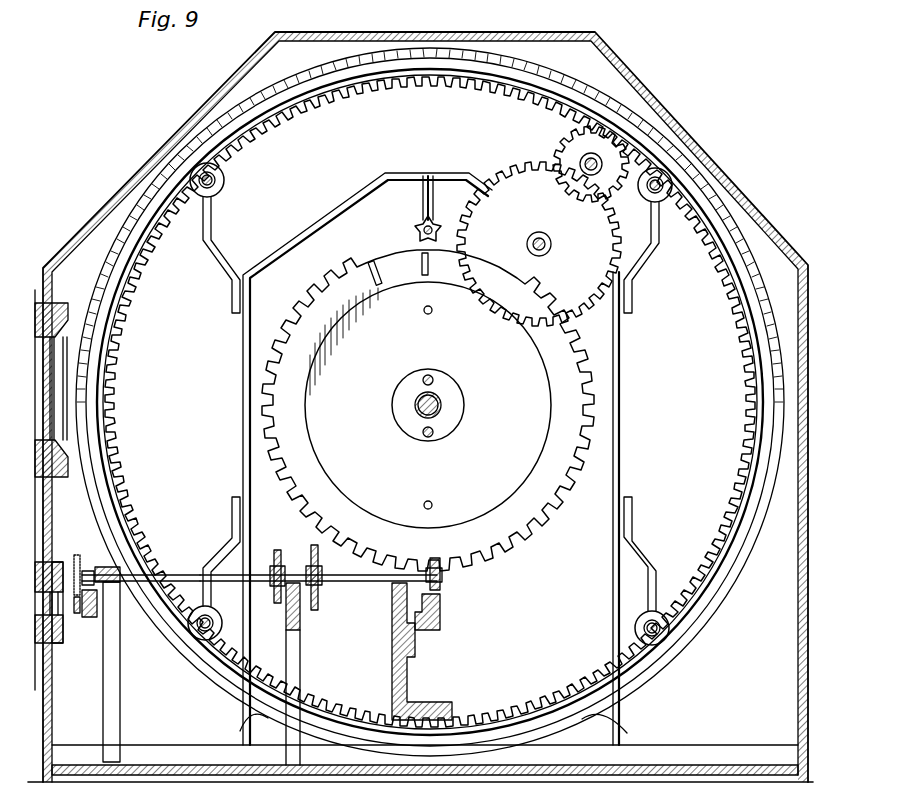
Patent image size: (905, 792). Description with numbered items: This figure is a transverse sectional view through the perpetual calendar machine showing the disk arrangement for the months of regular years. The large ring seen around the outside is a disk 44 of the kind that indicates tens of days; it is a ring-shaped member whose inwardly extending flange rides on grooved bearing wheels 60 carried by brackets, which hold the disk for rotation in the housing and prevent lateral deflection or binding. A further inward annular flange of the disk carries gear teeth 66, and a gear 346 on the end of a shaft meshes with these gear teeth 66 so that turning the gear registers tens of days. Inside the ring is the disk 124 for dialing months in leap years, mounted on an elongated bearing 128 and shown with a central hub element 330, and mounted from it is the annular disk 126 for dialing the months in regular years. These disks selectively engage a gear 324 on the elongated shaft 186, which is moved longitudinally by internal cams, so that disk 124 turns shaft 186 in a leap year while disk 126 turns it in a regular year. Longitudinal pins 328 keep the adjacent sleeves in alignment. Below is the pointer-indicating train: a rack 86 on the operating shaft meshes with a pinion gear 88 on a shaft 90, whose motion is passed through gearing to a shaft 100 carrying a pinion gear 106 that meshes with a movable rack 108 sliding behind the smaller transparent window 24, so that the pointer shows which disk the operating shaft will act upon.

The disk 44 is at (578, 83).
The gear teeth 66 is at (486, 92).
The gear 346 is at (582, 152).
The grooved bearing wheels 60 is at (225, 184).
The elongated shaft 186 is at (418, 222).
The gear 324 is at (443, 218).
The disk 126 is at (353, 280).
The disk 124 is at (338, 343).
The hub 330 is at (453, 400).
The elongated bearing 128 is at (417, 408).
The longitudinal pins 328 is at (432, 434).
The pinion gear 106 is at (77, 556).
The shaft 100 is at (195, 570).
The shaft 90 is at (350, 583).
The pinion gear 88 is at (440, 583).
The rack 86 is at (443, 605).
The movable rack 108 is at (77, 616).
The transparent window 24 is at (58, 648).